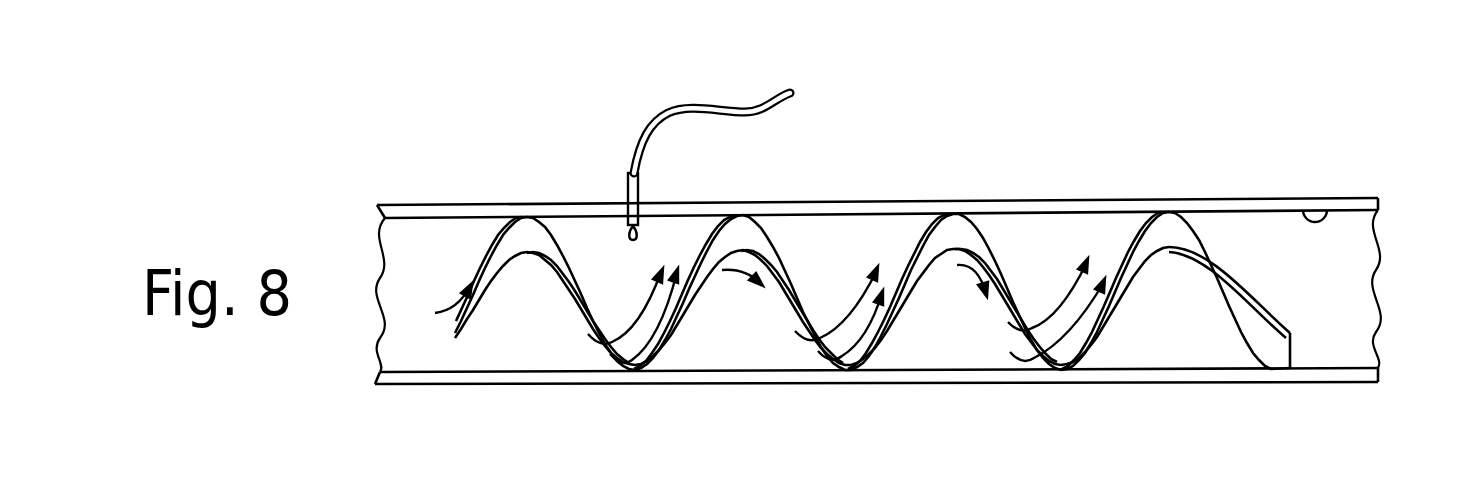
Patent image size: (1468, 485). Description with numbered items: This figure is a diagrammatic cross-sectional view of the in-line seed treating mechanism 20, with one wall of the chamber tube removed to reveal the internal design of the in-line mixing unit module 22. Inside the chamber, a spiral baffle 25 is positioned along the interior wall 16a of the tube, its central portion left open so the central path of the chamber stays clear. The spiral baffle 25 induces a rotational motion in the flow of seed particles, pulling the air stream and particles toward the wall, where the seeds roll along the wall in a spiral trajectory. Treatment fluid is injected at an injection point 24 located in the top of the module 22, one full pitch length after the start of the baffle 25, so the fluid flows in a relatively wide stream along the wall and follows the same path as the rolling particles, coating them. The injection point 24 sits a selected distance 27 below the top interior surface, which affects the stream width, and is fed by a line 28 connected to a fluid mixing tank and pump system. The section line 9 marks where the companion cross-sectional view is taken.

The section line 9 is at (442, 137).
The interior wall 16a is at (1328, 213).
The in-line seed treating mechanism 20 is at (880, 157).
The in-line mixing unit module 22 is at (1085, 197).
The injection point 24 is at (640, 223).
The spiral baffle 25 is at (1185, 233).
The distance 27 is at (612, 227).
The line 28 is at (750, 101).